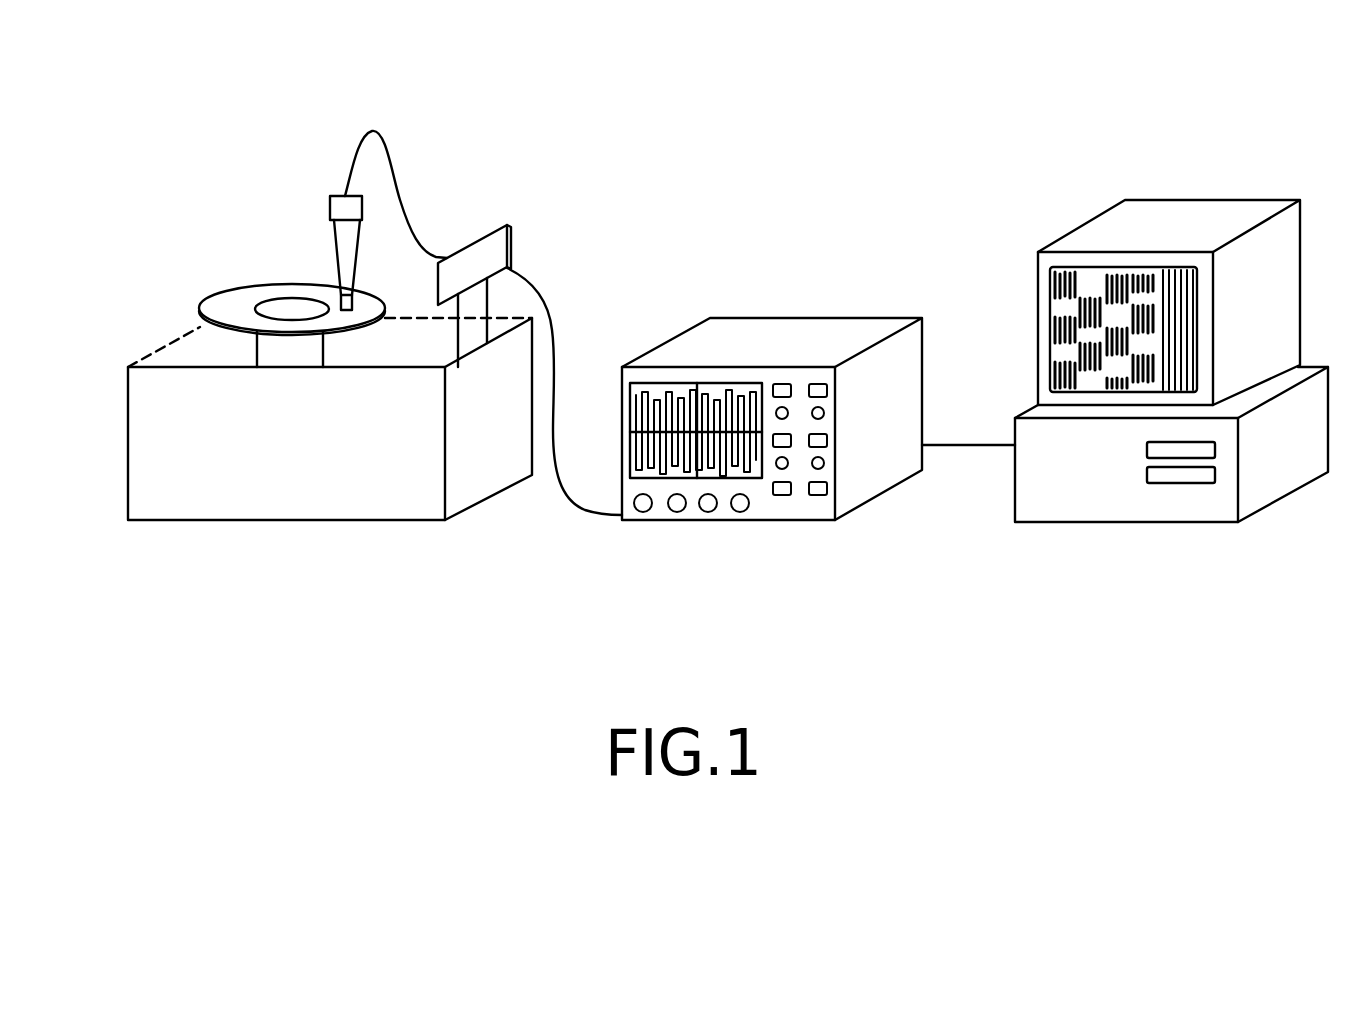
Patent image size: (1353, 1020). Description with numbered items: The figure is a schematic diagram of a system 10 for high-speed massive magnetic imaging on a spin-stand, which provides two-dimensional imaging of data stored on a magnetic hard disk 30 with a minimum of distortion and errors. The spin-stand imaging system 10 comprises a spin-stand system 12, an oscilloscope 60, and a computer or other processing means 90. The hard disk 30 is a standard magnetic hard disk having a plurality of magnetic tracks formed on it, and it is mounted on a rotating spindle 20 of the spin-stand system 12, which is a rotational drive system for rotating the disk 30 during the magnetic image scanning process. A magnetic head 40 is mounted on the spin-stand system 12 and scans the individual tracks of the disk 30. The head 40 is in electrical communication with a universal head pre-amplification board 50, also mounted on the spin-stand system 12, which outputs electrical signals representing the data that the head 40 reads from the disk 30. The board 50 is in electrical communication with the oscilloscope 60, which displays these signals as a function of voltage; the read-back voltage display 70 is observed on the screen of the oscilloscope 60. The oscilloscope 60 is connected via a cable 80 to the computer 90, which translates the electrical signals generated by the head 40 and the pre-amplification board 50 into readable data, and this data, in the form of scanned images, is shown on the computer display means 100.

The system 10 is at (208, 606).
The spin-stand system 12 is at (157, 488).
The rotating spindle 20 is at (285, 358).
The magnetic hard disk 30 is at (233, 302).
The magnetic head 40 is at (345, 302).
The universal head pre-amplification board 50 is at (488, 257).
The oscilloscope 60 is at (723, 522).
The read-back voltage display 70 is at (671, 397).
The cable 80 is at (965, 445).
The computer or other processing means 90 is at (1088, 500).
The computer display means 100 is at (1112, 277).